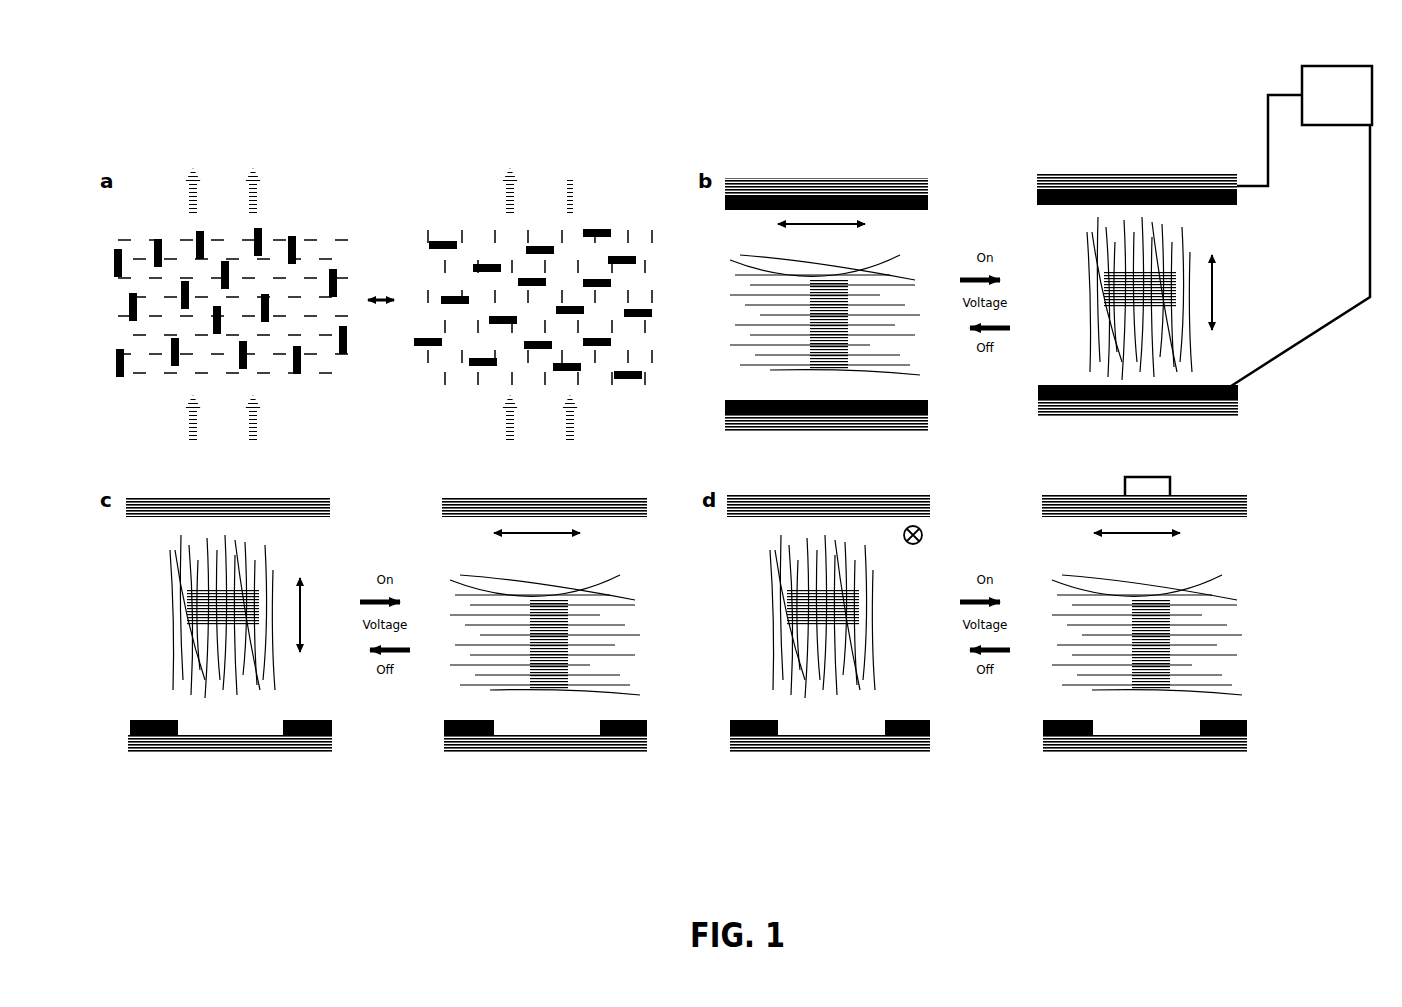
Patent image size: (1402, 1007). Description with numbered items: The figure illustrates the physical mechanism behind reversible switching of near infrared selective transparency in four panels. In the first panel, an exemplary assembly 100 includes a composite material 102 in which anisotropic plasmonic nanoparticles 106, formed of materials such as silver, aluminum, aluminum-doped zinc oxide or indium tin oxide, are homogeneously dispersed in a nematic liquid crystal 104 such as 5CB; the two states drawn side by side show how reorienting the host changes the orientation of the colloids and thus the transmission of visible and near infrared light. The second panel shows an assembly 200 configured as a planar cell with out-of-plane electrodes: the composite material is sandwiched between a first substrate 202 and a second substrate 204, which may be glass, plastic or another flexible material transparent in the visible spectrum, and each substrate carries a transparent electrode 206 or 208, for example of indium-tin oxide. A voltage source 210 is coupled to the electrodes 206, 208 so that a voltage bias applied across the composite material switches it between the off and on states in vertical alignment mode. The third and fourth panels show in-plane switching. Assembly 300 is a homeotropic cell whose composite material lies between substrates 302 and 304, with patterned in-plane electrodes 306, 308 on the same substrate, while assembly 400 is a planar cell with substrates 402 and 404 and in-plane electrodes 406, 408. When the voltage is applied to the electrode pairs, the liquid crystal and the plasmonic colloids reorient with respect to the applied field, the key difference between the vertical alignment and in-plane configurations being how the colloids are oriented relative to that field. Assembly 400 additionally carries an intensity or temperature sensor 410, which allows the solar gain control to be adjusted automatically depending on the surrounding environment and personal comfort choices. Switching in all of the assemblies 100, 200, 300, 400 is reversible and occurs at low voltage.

The assembly 100 is at (232, 128).
The composite material 102 is at (338, 223).
The nematic liquid crystal 104 is at (283, 372).
The plasmonic nanoparticles 106 is at (159, 255).
The assembly 200 is at (828, 132).
The substrate 202 is at (925, 186).
The substrate 204 is at (927, 423).
The electrode 206 is at (920, 210).
The electrode 208 is at (923, 400).
The voltage source 210 is at (1310, 65).
The assembly 300 is at (190, 770).
The substrate 302 is at (272, 497).
The substrate 304 is at (325, 741).
The electrode 306 is at (168, 718).
The electrode 308 is at (285, 718).
The assembly 400 is at (807, 763).
The substrate 402 is at (922, 503).
The substrate 404 is at (927, 745).
The electrode 406 is at (768, 718).
The electrode 408 is at (897, 718).
The intensity or temperature sensor 410 is at (1148, 477).